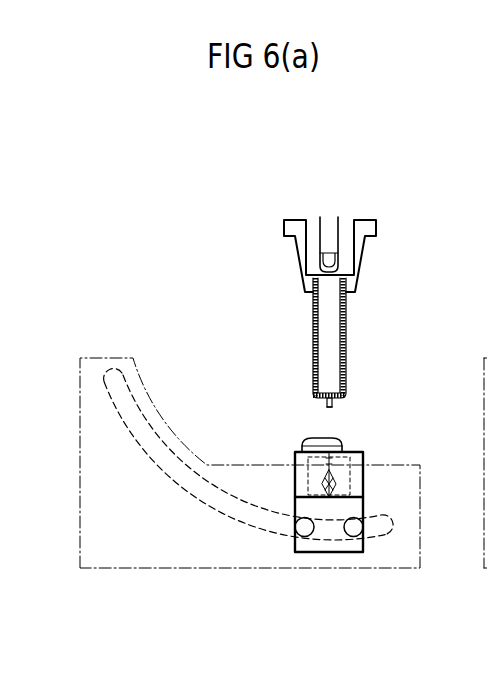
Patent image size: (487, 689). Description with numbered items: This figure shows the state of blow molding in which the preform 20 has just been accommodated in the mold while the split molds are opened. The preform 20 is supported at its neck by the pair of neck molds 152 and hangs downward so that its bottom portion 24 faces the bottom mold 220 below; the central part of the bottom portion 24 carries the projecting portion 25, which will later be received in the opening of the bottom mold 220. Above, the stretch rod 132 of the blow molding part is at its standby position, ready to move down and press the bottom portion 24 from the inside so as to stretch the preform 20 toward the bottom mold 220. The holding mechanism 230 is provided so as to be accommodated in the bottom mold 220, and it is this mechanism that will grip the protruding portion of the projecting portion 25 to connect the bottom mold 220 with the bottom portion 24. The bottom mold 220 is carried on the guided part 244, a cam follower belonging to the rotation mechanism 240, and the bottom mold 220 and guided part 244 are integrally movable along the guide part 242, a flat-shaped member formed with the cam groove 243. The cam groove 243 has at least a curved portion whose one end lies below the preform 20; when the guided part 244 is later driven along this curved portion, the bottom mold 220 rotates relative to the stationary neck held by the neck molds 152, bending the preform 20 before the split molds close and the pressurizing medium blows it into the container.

The preform 20 is at (346, 330).
The bottom portion 24 is at (339, 402).
The projecting portion 25 is at (333, 407).
The stretch rod 132 is at (338, 227).
The neck molds 152 is at (360, 252).
The bottom mold 220 is at (312, 438).
The holding mechanism 230 is at (365, 476).
The rotation mechanism 240 is at (276, 518).
The guide part 242 is at (307, 633).
The cam groove 243 is at (248, 501).
The guided part 244 is at (293, 535).